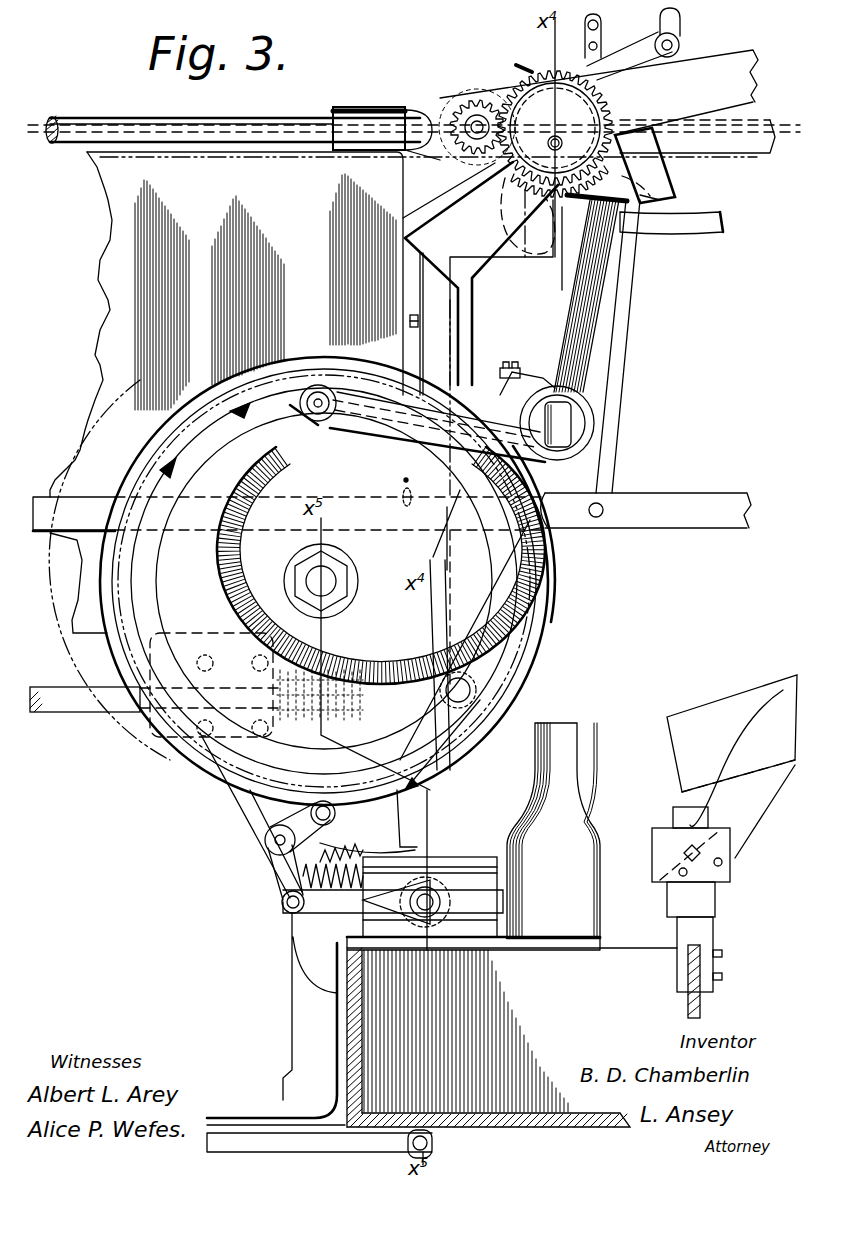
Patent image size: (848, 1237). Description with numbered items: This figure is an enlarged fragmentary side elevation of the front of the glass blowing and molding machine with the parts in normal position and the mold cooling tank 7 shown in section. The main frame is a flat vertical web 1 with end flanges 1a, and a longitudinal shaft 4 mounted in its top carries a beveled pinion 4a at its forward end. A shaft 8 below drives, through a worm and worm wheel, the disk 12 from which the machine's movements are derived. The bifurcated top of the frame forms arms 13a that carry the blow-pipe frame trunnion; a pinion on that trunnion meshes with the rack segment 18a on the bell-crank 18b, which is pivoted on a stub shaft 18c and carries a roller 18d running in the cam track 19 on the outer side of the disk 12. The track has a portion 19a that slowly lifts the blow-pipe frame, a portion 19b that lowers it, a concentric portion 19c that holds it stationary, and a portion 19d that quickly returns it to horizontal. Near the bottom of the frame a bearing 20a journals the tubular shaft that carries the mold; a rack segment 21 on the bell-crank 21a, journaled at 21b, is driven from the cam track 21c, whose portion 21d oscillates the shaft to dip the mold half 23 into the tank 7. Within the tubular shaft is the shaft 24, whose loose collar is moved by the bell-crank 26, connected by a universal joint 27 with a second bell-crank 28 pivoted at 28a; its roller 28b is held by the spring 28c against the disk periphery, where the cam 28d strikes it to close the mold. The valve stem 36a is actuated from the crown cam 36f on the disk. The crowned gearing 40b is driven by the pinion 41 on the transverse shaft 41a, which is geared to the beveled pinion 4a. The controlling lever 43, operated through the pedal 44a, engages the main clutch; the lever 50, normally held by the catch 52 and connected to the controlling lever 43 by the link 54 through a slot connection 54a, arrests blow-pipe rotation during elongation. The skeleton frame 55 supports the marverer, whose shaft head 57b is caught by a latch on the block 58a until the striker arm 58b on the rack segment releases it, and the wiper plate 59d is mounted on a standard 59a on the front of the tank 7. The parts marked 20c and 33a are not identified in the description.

The vertical web 1 is at (92, 601).
The end flange 1a is at (467, 350).
The longitudinal shaft 4 is at (97, 138).
The beveled pinion 4a is at (419, 110).
The mold cooling tank 7 is at (633, 968).
The shaft 8 is at (58, 700).
The disk 12 is at (517, 623).
The arm 13a is at (522, 232).
The rack segment 18a is at (648, 167).
The bell-crank 18b is at (600, 313).
The stub shaft 18c is at (580, 421).
The roller 18d is at (317, 403).
The cam track 19 is at (220, 560).
The cam track portion 19a is at (462, 456).
The cam track portion 19b is at (395, 650).
The concentric portion 19c is at (288, 648).
The cam track portion 19d is at (270, 437).
The bearing 20a is at (357, 930).
The link 20c is at (468, 897).
The rack segment 21 is at (305, 875).
The bell-crank 21a is at (420, 800).
The journal 21b is at (452, 748).
The cam track 21c is at (163, 497).
The cam track portion 21d is at (547, 556).
The mold half 23 is at (563, 827).
The shaft 24 is at (440, 888).
The bell-crank 26 is at (430, 922).
The universal joint 27 is at (267, 917).
The bell-crank 28 is at (275, 862).
The pivot 28a is at (262, 846).
The roller 28b is at (268, 838).
The spring 28c is at (283, 905).
The cam 28d is at (533, 485).
The bracket 33a is at (539, 378).
The valve stem 36a is at (410, 317).
The crown cam 36f is at (163, 443).
The crowned gearing 40b is at (544, 70).
The pinion 41 is at (483, 105).
The transverse shaft 41a is at (474, 108).
The controlling lever 43 is at (683, 510).
The pedal 44a is at (290, 1072).
The lever 50 is at (599, 91).
The catch 52 is at (597, 52).
The link 54 is at (632, 272).
The slot connection 54a is at (680, 30).
The skeleton frame 55 is at (721, 75).
The head 57b is at (670, 197).
The block 58a is at (672, 136).
The striker arm 58b is at (705, 232).
The standard 59a is at (693, 928).
The wiper plate 59d is at (715, 730).